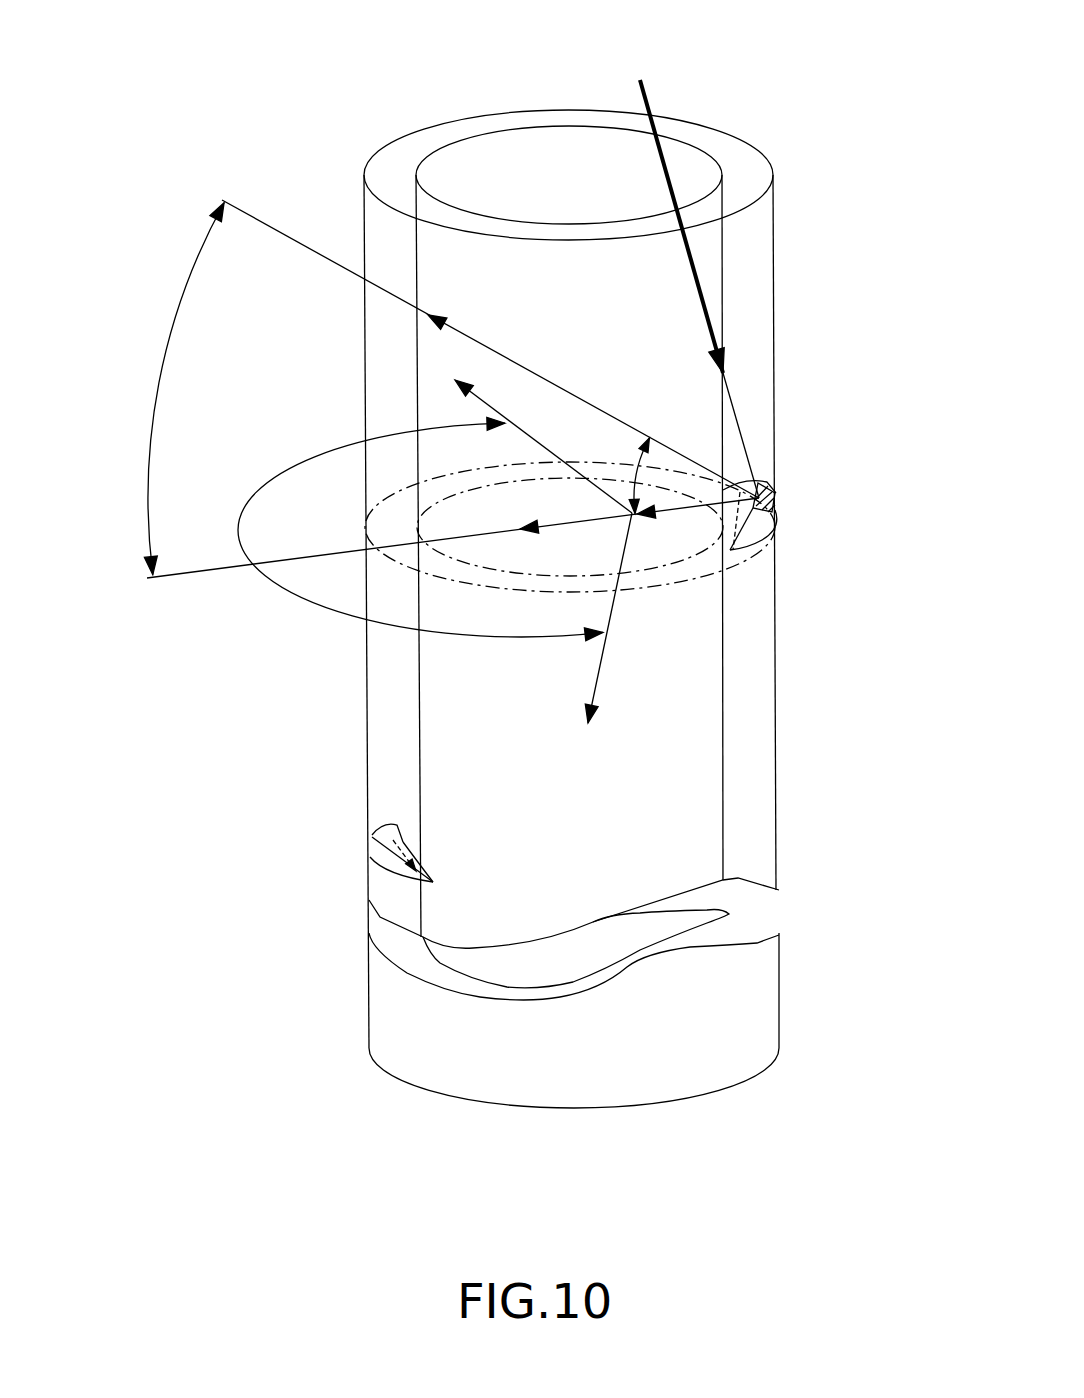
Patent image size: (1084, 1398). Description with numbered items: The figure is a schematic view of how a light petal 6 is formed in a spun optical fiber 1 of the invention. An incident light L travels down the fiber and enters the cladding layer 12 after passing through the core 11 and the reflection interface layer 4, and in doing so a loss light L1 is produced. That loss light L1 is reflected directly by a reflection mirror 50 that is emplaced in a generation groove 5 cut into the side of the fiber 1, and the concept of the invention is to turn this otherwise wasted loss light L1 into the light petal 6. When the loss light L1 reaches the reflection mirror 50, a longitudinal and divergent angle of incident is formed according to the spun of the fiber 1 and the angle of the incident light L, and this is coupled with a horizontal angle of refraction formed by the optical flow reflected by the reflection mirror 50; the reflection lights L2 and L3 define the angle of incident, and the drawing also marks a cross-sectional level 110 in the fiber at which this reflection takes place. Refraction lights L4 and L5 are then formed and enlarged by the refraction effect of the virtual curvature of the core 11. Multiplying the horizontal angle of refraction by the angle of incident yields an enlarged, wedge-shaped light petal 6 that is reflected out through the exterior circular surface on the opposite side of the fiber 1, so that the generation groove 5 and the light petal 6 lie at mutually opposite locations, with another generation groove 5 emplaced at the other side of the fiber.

The optical fiber 1 is at (797, 315).
The reflection interface layer 4 is at (420, 752).
The generation groove 5 is at (795, 493).
The light petal 6 is at (158, 380).
The core 11 is at (483, 157).
The cladding layer 12 is at (395, 157).
The reflection mirror 50 is at (754, 508).
The cross-sectional plane of tube 110 is at (657, 570).
The incident light L is at (648, 100).
The loss light L1 is at (740, 425).
The reflection light L2 is at (695, 457).
The reflection light L3 is at (693, 507).
The refraction light L4 is at (528, 437).
The refraction light L5 is at (605, 655).